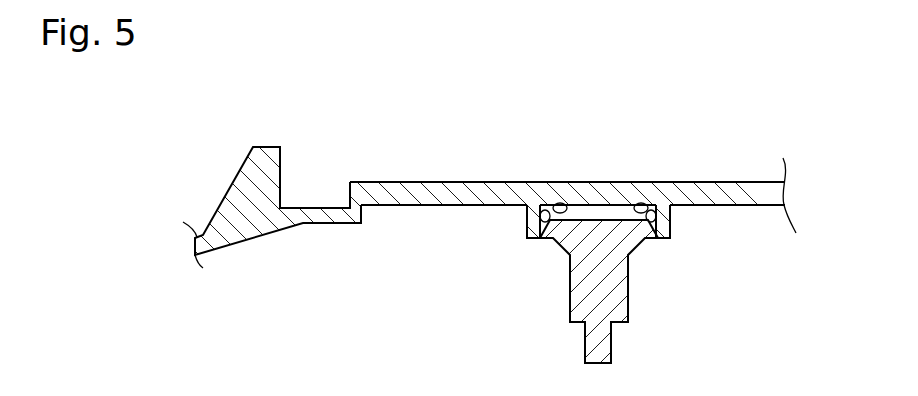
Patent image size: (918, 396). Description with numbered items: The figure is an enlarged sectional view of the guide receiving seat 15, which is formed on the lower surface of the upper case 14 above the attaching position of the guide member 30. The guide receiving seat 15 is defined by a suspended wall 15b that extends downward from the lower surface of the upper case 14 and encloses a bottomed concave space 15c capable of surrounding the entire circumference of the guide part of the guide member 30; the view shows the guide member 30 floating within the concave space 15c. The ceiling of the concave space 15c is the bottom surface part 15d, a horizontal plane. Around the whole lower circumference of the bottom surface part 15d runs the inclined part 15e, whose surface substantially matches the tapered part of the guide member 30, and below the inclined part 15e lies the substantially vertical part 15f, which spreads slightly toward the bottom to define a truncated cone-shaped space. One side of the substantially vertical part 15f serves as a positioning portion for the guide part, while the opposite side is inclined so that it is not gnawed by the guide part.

The upper case 14 is at (242, 178).
The guide receiving seat 15 is at (521, 221).
The suspended wall 15b is at (527, 227).
The concave space 15c is at (616, 214).
The bottom surface part 15d is at (590, 202).
The inclined part 15e is at (559, 203).
The substantially vertical part 15f is at (702, 125).
The guide member 30 is at (617, 302).